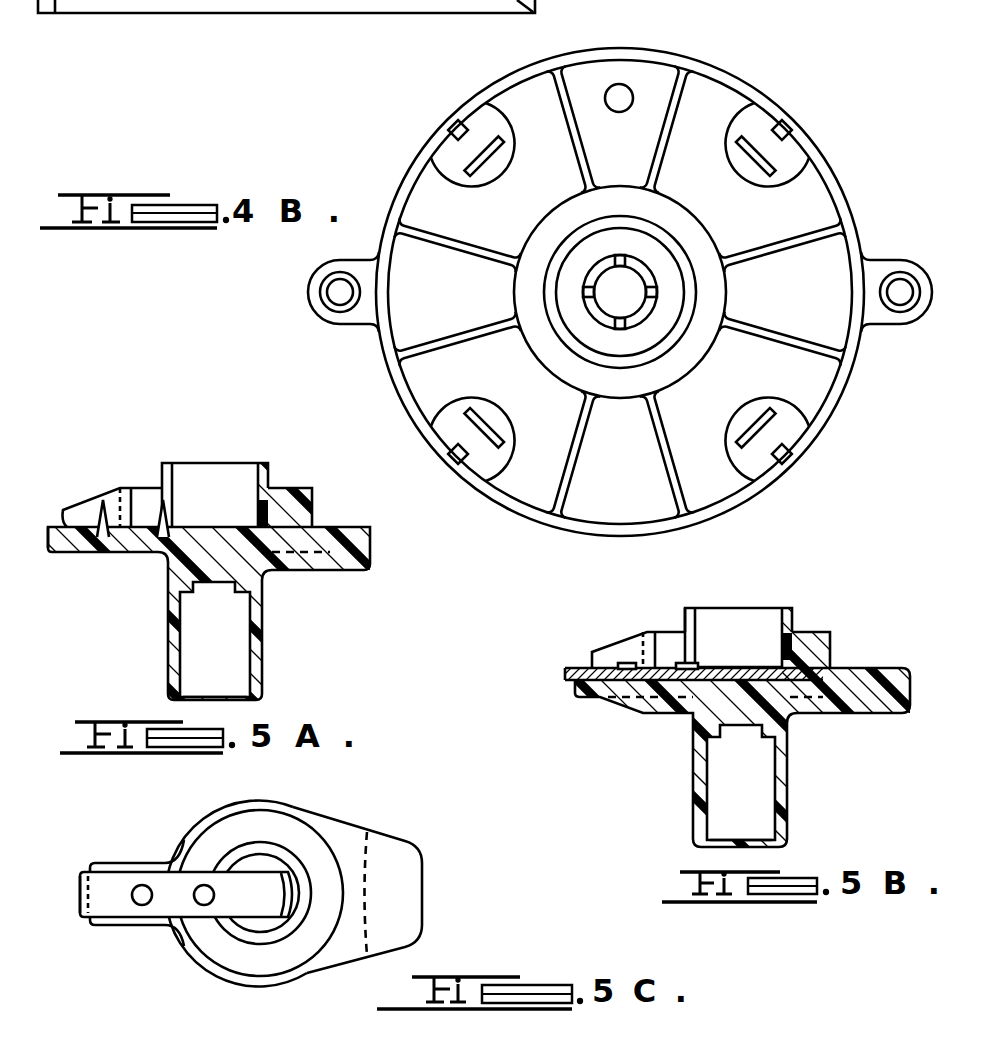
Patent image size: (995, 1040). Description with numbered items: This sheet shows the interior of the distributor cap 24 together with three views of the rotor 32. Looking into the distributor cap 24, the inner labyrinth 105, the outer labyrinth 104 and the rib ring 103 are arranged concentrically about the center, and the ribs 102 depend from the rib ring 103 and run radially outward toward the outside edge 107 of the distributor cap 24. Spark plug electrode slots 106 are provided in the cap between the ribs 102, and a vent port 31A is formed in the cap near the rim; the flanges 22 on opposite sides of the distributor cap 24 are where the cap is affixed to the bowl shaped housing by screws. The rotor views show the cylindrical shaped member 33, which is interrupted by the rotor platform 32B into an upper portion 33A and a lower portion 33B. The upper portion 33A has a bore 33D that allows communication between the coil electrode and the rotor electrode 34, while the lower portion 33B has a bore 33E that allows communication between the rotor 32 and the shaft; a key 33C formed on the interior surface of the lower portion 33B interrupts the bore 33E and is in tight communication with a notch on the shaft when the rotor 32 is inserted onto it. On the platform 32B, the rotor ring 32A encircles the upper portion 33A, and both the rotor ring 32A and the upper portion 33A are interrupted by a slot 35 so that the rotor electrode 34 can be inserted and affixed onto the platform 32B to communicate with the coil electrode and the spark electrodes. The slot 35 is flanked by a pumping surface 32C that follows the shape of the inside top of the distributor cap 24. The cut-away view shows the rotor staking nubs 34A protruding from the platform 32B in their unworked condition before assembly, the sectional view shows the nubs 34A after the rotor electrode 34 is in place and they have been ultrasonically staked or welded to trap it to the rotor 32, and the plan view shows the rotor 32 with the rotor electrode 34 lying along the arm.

In FIG. 4B, the flanges 22 is at (900, 260).
In FIG. 4B, the distributor cap 24 is at (820, 82).
In FIG. 4B, the vent port 31A is at (619, 92).
In FIG. 5A, the rotor 32 is at (251, 455).
In FIG. 5B, the rotor 32 is at (881, 607).
In FIG. 5A, the rotor ring 32A is at (313, 497).
In FIG. 5B, the rotor ring 32A is at (830, 640).
In FIG. 5C, the rotor ring 32A is at (290, 808).
In FIG. 5A, the rotor platform 32B is at (346, 567).
In FIG. 5B, the rotor platform 32B is at (890, 703).
In FIG. 5C, the rotor platform 32B is at (416, 897).
In FIG. 5A, the pumping surface 32C is at (103, 488).
In FIG. 5B, the pumping surface 32C is at (612, 644).
In FIG. 5C, the pumping surface 32C is at (128, 863).
In FIG. 5B, the cylindrical shaped member 33 is at (761, 606).
In FIG. 5A, the upper portion 33A is at (162, 472).
In FIG. 5B, the upper portion 33A is at (793, 618).
In FIG. 5C, the upper portion 33A is at (224, 849).
In FIG. 5A, the lower portion 33B is at (168, 663).
In FIG. 5A, the key 33C is at (233, 637).
In FIG. 5B, the key 33C is at (767, 778).
In FIG. 5B, the bore 33D is at (697, 666).
In FIG. 5B, the bore 33E is at (710, 786).
In FIG. 5B, the rotor electrode 34 is at (565, 675).
In FIG. 5C, the rotor electrode 34 is at (118, 905).
In FIG. 5A, the rotor staking nubs 34A is at (160, 533).
In FIG. 5B, the rotor staking nubs 34A is at (677, 663).
In FIG. 5A, the slot 35 is at (67, 527).
In FIG. 5C, the slot 35 is at (119, 914).
In FIG. 4B, the ribs 102 is at (580, 138).
In FIG. 4B, the rib ring 103 is at (710, 357).
In FIG. 4B, the outer labyrinth 104 is at (654, 366).
In FIG. 4B, the inner labyrinth 105 is at (656, 303).
In FIG. 4B, the spark plug electrode slots 106 is at (753, 427).
In FIG. 4B, the outside edge 107 is at (845, 389).